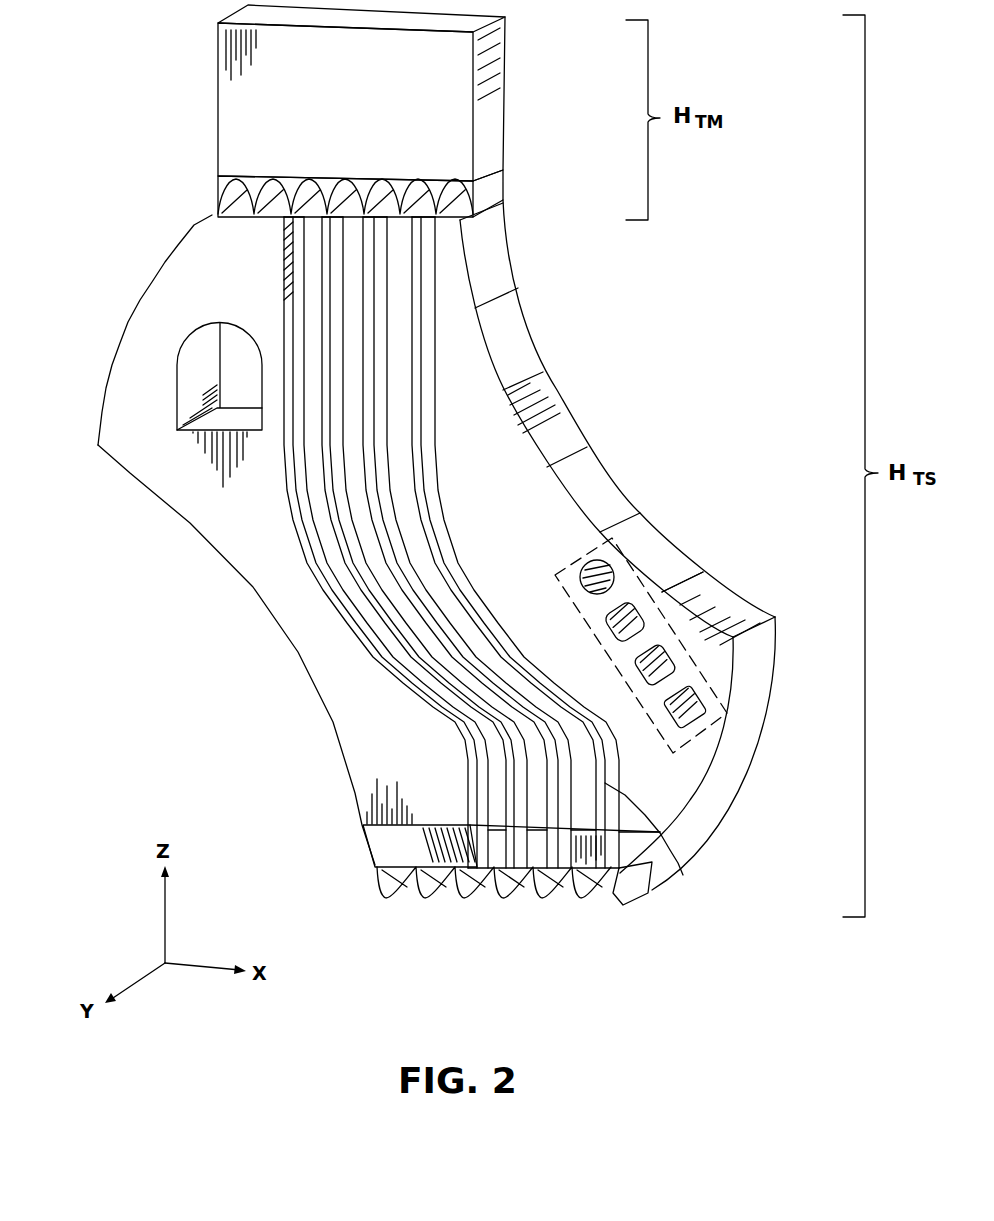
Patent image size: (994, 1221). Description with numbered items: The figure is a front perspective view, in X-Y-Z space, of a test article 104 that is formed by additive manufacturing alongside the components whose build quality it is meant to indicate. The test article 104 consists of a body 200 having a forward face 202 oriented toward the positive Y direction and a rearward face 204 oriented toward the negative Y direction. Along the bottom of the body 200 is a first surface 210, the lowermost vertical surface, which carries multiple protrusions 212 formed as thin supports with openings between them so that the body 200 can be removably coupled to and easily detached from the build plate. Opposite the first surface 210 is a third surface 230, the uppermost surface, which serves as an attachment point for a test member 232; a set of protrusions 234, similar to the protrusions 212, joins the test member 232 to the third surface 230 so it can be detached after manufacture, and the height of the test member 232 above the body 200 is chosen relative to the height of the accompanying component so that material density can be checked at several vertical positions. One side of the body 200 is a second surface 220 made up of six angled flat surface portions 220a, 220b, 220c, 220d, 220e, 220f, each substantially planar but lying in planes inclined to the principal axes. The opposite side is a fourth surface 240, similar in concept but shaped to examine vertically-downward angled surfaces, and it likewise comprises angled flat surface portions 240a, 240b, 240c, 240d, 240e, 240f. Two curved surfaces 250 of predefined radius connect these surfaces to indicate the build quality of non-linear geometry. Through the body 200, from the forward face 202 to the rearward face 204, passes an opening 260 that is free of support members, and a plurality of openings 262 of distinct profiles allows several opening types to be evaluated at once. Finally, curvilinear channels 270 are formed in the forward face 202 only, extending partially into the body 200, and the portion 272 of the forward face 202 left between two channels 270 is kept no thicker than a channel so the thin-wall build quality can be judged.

The test article 104 is at (775, 330).
The body 200 is at (439, 601).
The forward face 202 is at (308, 356).
The rearward face 204 is at (748, 700).
The first surface 210 is at (559, 875).
The protrusions 212 is at (402, 888).
The second surface 220 is at (655, 422).
The angled flat surface portion 220a is at (720, 607).
The angled flat surface portion 220b is at (663, 560).
The angled flat surface portion 220c is at (603, 497).
The angled flat surface portion 220d is at (549, 412).
The angled flat surface portion 220e is at (512, 341).
The angled flat surface portion 220f is at (491, 260).
The third surface 230 is at (319, 111).
The test member 232 is at (228, 100).
The set of protrusions 234 is at (363, 186).
The fourth surface 240 is at (192, 655).
The angled flat surface portion 240a is at (130, 474).
The angled flat surface portion 240b is at (190, 524).
The angled flat surface portion 240c is at (253, 588).
The angled flat surface portion 240d is at (298, 652).
The angled flat surface portion 240e is at (333, 722).
The angled flat surface portion 240f is at (355, 793).
The curved surface 250 is at (124, 312).
The opening 260 is at (225, 388).
The plurality of openings 262 is at (733, 714).
The curvilinear channels 270 is at (527, 892).
The portion of forward face 272 is at (551, 870).